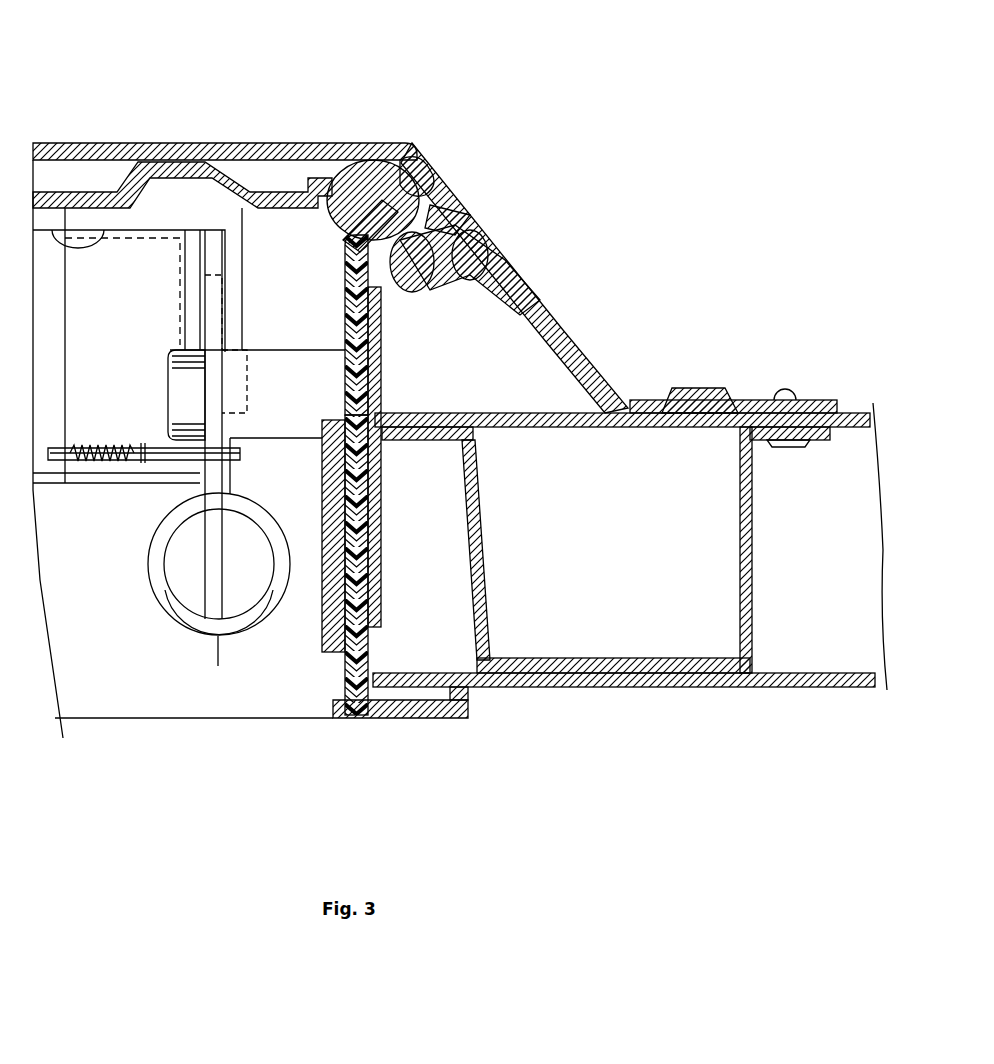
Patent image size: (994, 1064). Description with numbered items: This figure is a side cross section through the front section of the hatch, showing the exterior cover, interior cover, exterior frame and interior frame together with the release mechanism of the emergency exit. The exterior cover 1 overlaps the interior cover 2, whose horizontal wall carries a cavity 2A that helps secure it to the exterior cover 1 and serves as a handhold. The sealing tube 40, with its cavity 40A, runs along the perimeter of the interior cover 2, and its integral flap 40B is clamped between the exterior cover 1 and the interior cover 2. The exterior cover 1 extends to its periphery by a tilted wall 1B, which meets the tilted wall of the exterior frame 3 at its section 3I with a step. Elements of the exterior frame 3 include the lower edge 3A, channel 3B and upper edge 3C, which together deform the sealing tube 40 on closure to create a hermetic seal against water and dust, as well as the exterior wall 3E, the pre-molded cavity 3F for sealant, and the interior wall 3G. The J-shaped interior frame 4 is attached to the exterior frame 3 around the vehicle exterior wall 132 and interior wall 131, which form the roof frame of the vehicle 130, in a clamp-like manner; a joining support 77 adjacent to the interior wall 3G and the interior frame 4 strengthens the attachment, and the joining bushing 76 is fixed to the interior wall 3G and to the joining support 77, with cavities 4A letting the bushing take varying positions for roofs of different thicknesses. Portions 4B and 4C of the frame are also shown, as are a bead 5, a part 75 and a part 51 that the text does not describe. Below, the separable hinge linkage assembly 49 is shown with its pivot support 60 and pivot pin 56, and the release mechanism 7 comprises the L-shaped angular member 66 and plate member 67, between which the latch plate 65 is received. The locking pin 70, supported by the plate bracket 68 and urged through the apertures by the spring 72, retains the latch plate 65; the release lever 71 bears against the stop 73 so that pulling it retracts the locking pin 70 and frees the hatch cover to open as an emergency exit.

The exterior cover 1 is at (328, 148).
The interior cover 2 is at (297, 195).
The cavity 2A is at (183, 145).
The sealing tube 40 is at (393, 180).
The cavity 40A is at (358, 165).
The integral flap 40B is at (422, 148).
The tilted wall 1B is at (443, 192).
The upper edge 3C is at (442, 228).
The lower edge 3A is at (475, 278).
The channel 3B is at (420, 290).
The tilted wall section 3I is at (557, 302).
The interior wall 3G is at (355, 320).
The exterior wall 3E is at (647, 412).
The cavity 3F is at (707, 390).
The exterior frame 3 is at (810, 407).
The seal bead 5 is at (788, 397).
The interior frame 4 is at (345, 572).
The cavities 4A is at (333, 440).
The frame foot 4B is at (400, 712).
The frame block 4C is at (465, 700).
The joining support 77 is at (375, 470).
The exterior wall 132 is at (460, 413).
The vehicle 130 is at (745, 490).
The interior wall 131 is at (587, 676).
The joining bushing 76 is at (320, 360).
The L-shaped angular member 66 is at (233, 250).
The latch plate 65 is at (212, 300).
The plate member 67 is at (183, 268).
The plate bracket 68 is at (67, 345).
The release mechanism 7 is at (145, 394).
The spring 72 is at (110, 447).
The stop 73 is at (143, 443).
The locking pin 70 is at (85, 481).
The release lever 71 is at (106, 483).
The bracket 75 is at (140, 487).
The pivot support 60 is at (215, 500).
The pivot pin 56 is at (193, 560).
The ring lower part 51 is at (172, 607).
The hinge linkage assembly 49 is at (218, 667).